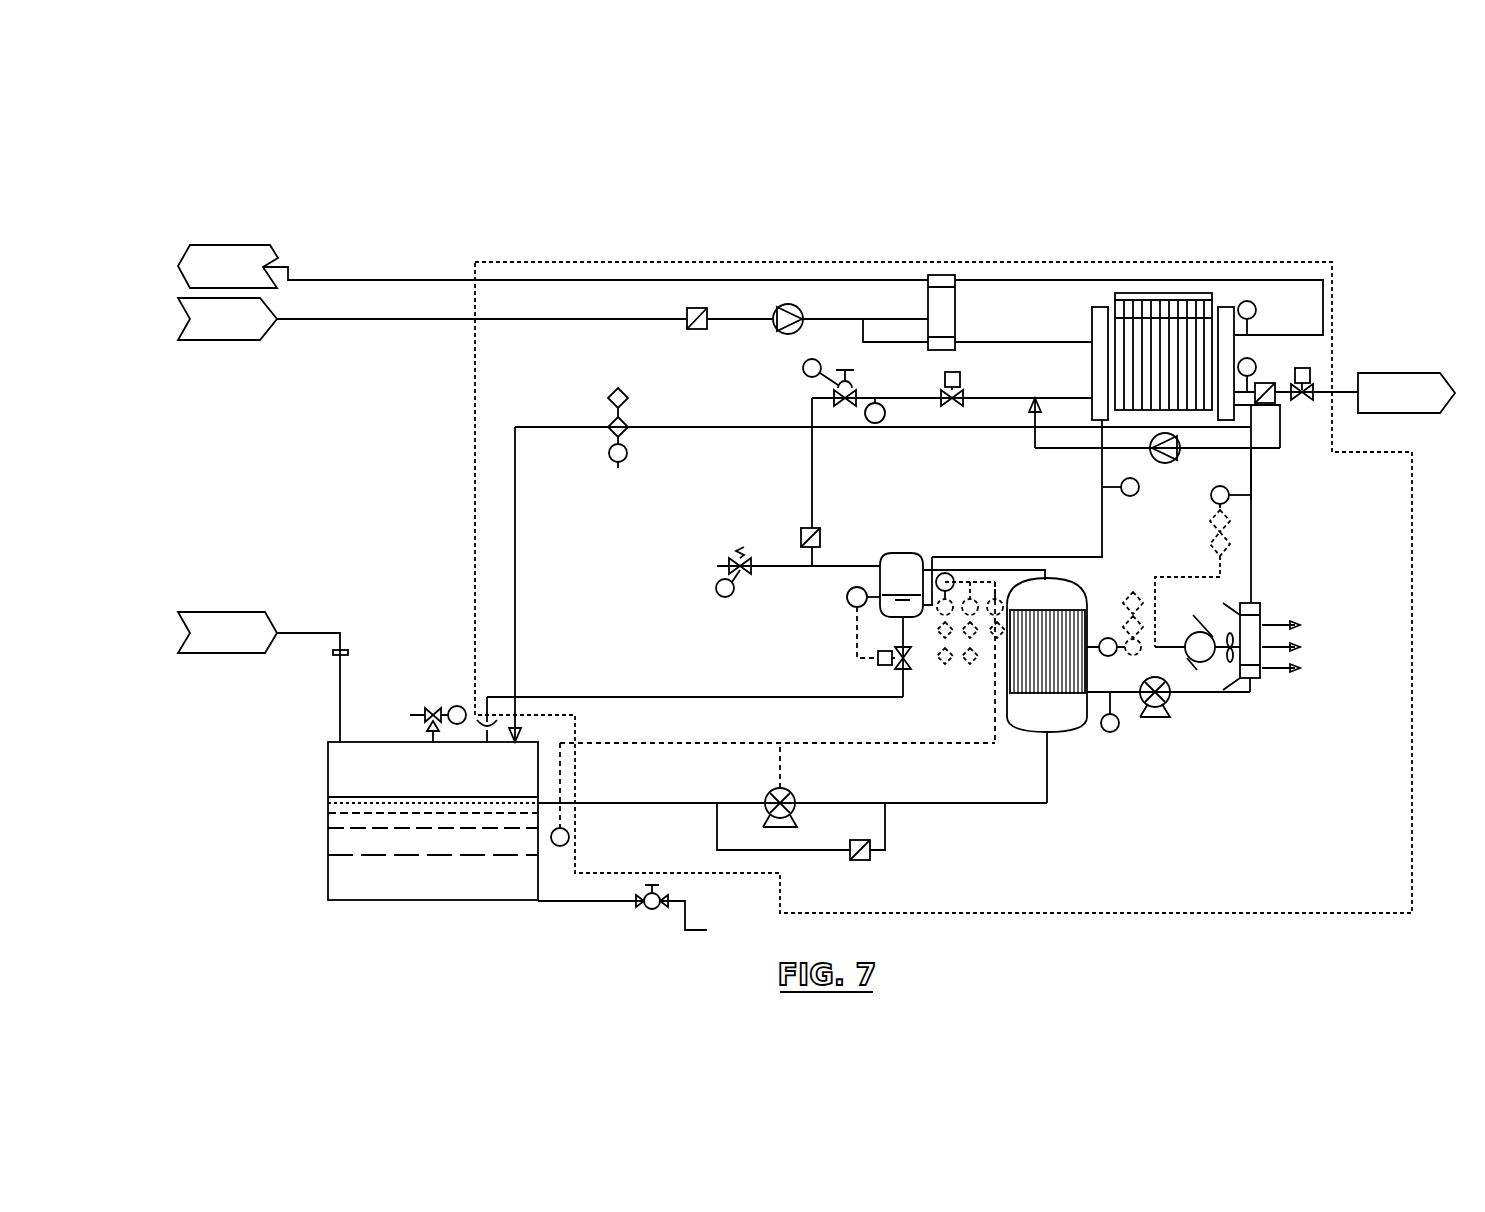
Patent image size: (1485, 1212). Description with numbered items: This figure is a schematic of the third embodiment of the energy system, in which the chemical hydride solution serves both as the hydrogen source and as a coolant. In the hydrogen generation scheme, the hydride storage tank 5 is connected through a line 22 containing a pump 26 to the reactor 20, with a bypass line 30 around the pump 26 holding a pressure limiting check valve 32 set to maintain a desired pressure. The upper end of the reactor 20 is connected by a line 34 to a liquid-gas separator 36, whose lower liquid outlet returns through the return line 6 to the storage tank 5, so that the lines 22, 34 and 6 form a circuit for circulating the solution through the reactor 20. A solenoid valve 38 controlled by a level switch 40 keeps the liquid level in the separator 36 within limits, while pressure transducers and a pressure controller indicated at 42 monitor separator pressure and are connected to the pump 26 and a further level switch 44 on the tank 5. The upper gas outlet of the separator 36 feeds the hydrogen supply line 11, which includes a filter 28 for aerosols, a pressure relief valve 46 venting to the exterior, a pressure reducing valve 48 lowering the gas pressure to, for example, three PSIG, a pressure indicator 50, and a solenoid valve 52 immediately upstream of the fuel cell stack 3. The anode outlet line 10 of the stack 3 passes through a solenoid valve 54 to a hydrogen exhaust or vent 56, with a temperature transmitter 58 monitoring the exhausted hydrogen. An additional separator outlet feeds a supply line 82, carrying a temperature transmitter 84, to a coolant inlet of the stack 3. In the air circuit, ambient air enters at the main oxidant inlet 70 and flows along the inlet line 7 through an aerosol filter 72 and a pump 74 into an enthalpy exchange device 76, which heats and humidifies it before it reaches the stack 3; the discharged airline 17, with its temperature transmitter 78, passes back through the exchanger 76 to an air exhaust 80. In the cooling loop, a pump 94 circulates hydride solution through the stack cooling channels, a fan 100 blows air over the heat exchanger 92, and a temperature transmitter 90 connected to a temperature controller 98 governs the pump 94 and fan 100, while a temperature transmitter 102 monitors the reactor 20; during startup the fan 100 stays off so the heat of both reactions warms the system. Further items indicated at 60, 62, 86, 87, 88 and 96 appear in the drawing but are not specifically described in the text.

The fuel cell stack 3 is at (1098, 307).
The hydride storage tank 5 is at (328, 840).
The return line 6 is at (825, 698).
The inlet line 7 is at (385, 320).
The hydrogen or anode outlet line 10 is at (1257, 385).
The hydrogen supply line 11 is at (812, 505).
The exhaust or discharged airline 17 is at (415, 280).
The reactor 20 is at (1063, 730).
The line 22 is at (1010, 805).
The pump 26 is at (795, 792).
The filter 28 is at (820, 528).
The bypass line 30 is at (888, 830).
The pressure limiting check valve 32 is at (860, 862).
The line 34 is at (965, 557).
The liquid-gas separator 36 is at (880, 575).
The solenoid valve 38 is at (908, 665).
The level switch 40 is at (850, 607).
The pressure transducers and pressure controller 42 is at (945, 572).
The further level switch 44 is at (570, 837).
The pressure relief valve 46 is at (738, 553).
The pressure reducing valve 48 is at (834, 396).
The pressure indicator 50 is at (885, 417).
The solenoid valve 52 is at (962, 385).
The solenoid valve 54 is at (1310, 385).
The hydrogen exhaust or vent 56 is at (1430, 413).
The temperature transmitter 58 is at (1250, 358).
The coolant line 60 is at (1283, 422).
The coolant pump 62 is at (1180, 456).
The main oxidant inlet 70 is at (277, 322).
The aerosol filter 72 is at (687, 312).
The pump 74 is at (775, 325).
The enthalpy exchange device 76 is at (938, 275).
The temperature transmitter 78 is at (1247, 300).
The air exhaust 80 is at (254, 246).
The supply line 82 is at (1105, 530).
The temperature transmitter 84 is at (1138, 492).
The line 86 is at (1285, 408).
The line 87 is at (530, 427).
The line 88 is at (1255, 462).
The temperature transmitter 90 is at (1255, 492).
The heat exchanger 92 is at (1262, 610).
The pump 94 is at (1170, 708).
The sensor 96 is at (1118, 740).
The temperature controller 98 is at (1225, 555).
The fan 100 is at (1255, 685).
The temperature transmitter 102 is at (1108, 637).